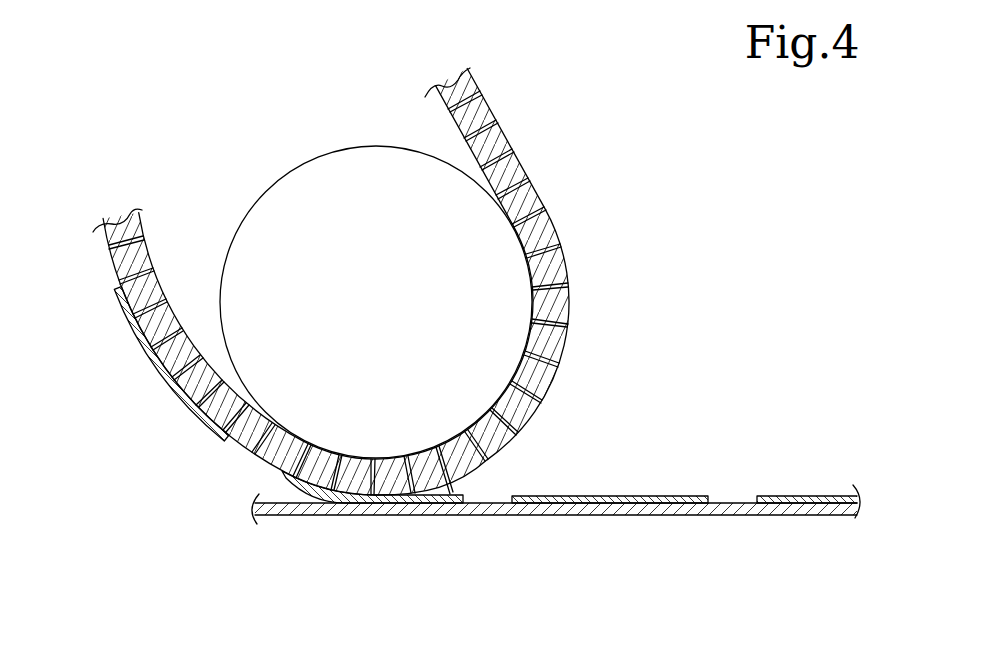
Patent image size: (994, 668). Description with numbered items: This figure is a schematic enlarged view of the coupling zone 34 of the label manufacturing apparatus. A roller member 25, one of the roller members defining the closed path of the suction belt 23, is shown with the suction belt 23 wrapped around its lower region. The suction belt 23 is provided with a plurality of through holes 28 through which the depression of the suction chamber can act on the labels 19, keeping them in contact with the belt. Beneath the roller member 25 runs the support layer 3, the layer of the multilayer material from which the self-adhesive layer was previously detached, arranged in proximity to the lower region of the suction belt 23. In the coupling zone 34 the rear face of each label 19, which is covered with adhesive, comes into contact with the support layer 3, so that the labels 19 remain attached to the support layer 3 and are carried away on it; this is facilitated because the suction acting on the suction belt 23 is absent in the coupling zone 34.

The roller member 25 is at (325, 196).
The suction belt 23 is at (482, 132).
The through holes 28 is at (143, 280).
The labels 19 is at (174, 385).
The support layer 3 is at (597, 516).
The coupling zone 34 is at (428, 528).